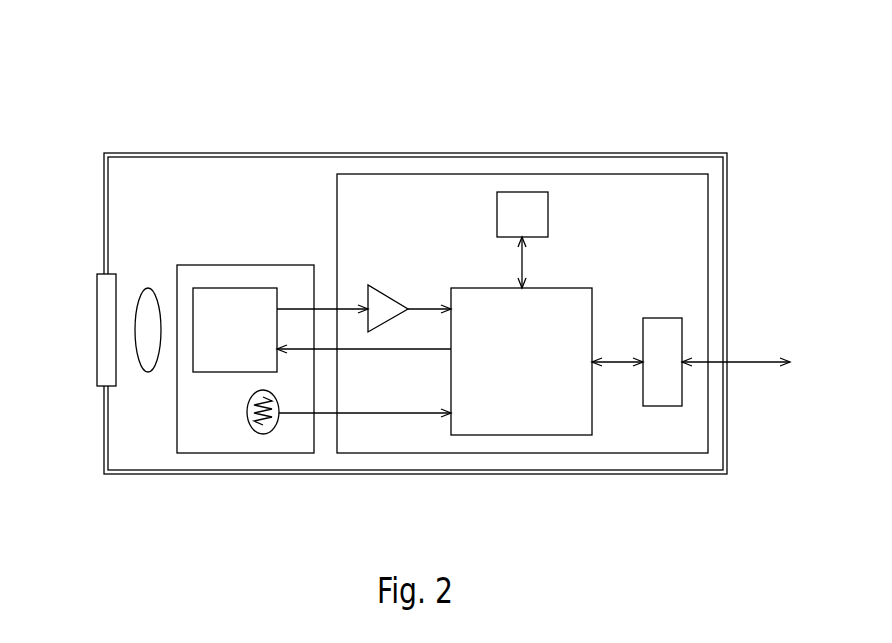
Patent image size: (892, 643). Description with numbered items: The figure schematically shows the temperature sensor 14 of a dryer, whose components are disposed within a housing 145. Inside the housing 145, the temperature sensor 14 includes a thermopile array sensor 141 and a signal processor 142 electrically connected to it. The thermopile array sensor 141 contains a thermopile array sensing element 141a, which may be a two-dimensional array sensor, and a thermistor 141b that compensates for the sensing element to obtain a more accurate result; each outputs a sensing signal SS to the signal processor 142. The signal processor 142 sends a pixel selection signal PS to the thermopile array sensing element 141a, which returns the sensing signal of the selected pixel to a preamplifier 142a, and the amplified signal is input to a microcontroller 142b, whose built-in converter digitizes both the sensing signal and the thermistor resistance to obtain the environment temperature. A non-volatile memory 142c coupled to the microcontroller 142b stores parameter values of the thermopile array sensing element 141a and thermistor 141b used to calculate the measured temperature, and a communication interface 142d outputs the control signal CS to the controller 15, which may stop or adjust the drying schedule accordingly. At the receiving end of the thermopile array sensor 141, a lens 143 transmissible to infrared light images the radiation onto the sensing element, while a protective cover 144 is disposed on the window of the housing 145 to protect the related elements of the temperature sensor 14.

The temperature sensor 14 is at (77, 127).
The controller 15 is at (752, 354).
The thermopile array sensor 141 is at (208, 453).
The thermopile array sensing element 141a is at (225, 297).
The thermistor 141b is at (270, 437).
The signal processor 142 is at (625, 453).
The preamplifier 142a is at (390, 298).
The microcontroller 142b is at (565, 300).
The non-volatile memory 142c is at (508, 213).
The communication interface 142d is at (665, 328).
The lens 143 is at (146, 296).
The protective cover 144 is at (103, 303).
The housing 145 is at (104, 190).